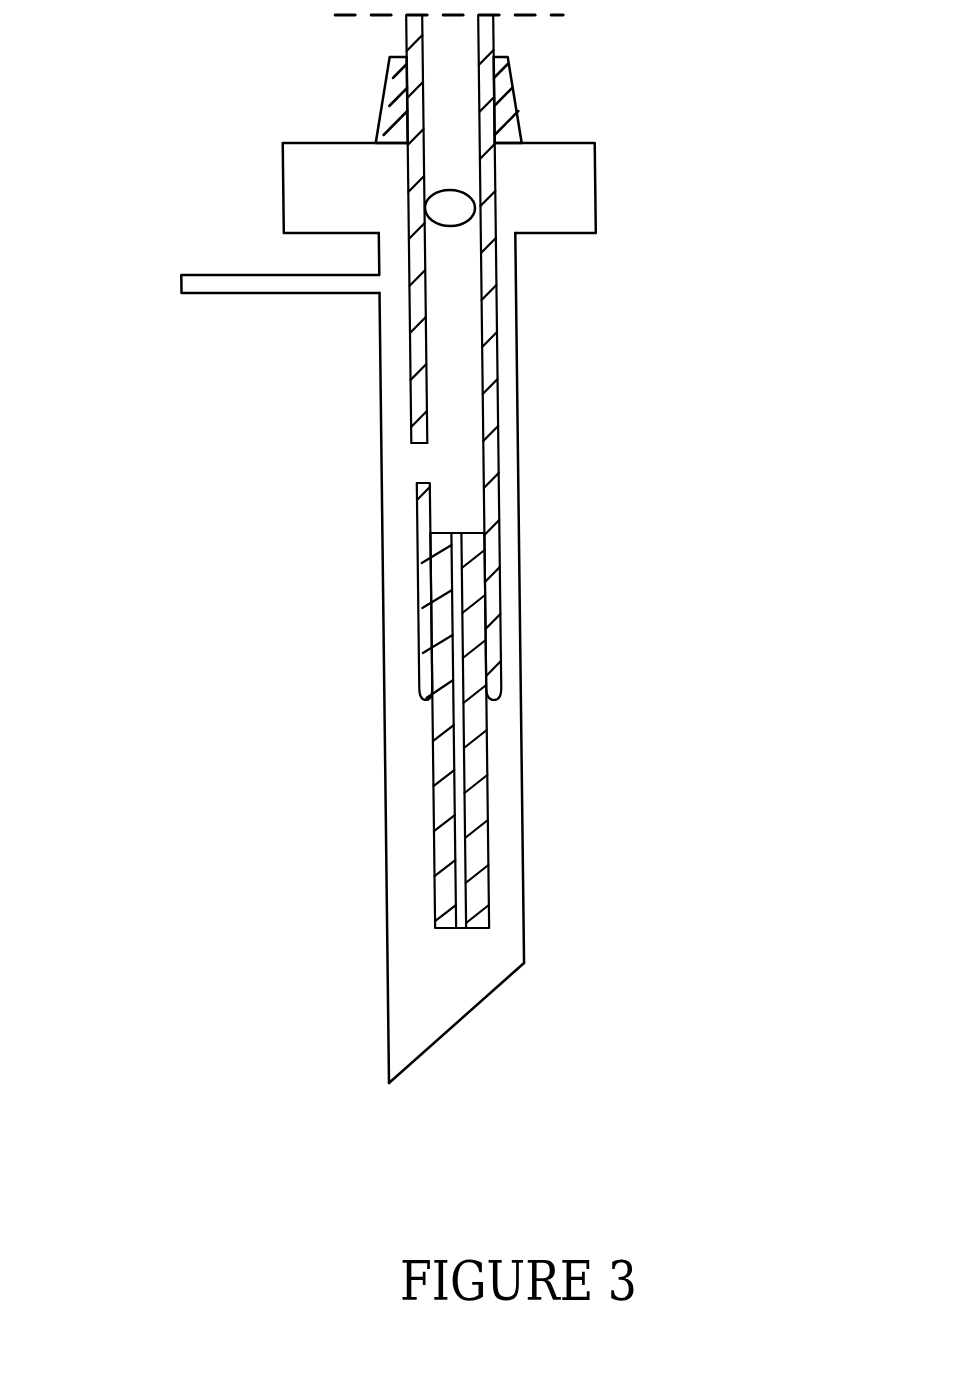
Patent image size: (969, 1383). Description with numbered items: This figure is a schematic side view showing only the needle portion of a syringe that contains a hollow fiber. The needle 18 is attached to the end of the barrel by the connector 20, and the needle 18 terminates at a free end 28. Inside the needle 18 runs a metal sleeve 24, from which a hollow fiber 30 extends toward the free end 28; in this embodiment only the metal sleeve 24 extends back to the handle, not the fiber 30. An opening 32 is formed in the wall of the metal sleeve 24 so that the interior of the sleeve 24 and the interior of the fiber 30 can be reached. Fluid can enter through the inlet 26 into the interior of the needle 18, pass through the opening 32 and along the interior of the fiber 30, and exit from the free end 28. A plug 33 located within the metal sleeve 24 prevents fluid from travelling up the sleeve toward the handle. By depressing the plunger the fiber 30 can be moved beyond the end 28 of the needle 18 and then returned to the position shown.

The needle 18 is at (509, 685).
The connector 20 is at (518, 160).
The metal sleeve 24 is at (478, 483).
The inlet 26 is at (220, 291).
The free end 28 is at (402, 1058).
The fiber 30 is at (470, 862).
The opening 32 is at (412, 460).
The plug 33 is at (450, 212).